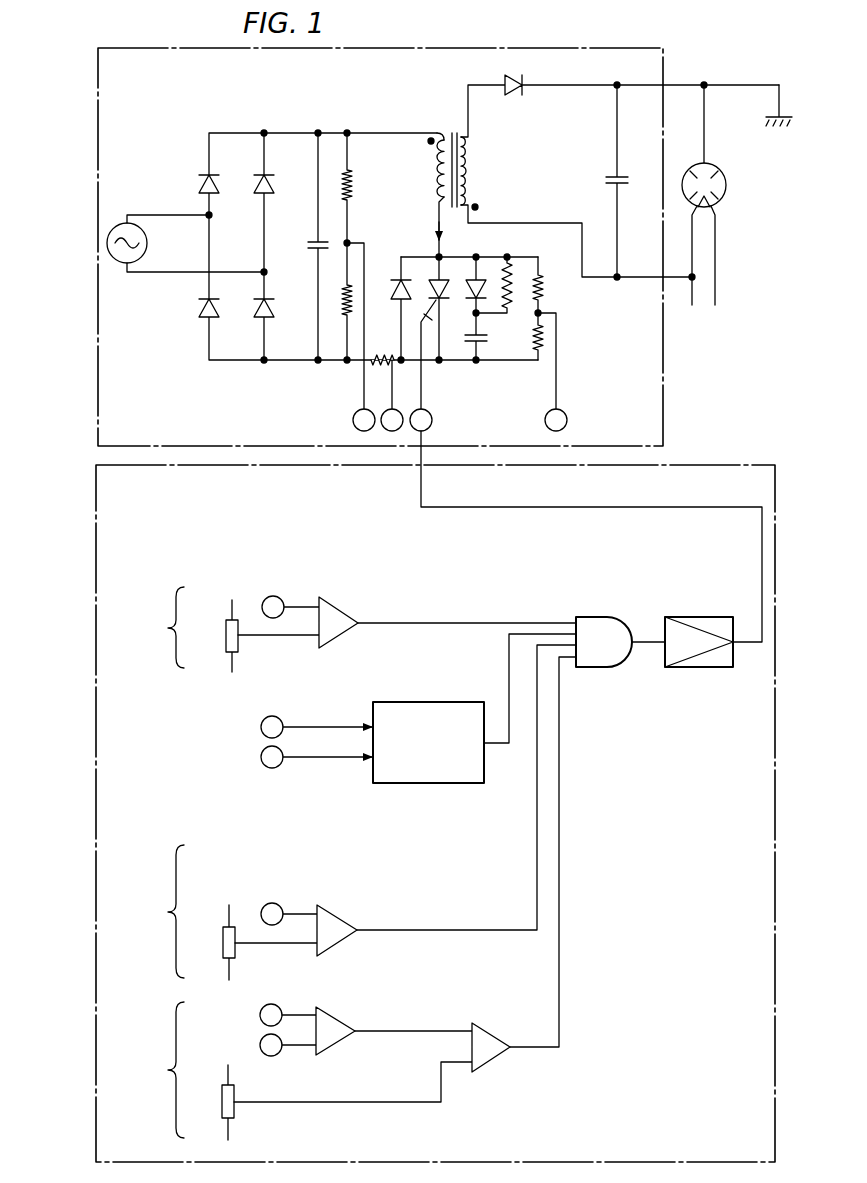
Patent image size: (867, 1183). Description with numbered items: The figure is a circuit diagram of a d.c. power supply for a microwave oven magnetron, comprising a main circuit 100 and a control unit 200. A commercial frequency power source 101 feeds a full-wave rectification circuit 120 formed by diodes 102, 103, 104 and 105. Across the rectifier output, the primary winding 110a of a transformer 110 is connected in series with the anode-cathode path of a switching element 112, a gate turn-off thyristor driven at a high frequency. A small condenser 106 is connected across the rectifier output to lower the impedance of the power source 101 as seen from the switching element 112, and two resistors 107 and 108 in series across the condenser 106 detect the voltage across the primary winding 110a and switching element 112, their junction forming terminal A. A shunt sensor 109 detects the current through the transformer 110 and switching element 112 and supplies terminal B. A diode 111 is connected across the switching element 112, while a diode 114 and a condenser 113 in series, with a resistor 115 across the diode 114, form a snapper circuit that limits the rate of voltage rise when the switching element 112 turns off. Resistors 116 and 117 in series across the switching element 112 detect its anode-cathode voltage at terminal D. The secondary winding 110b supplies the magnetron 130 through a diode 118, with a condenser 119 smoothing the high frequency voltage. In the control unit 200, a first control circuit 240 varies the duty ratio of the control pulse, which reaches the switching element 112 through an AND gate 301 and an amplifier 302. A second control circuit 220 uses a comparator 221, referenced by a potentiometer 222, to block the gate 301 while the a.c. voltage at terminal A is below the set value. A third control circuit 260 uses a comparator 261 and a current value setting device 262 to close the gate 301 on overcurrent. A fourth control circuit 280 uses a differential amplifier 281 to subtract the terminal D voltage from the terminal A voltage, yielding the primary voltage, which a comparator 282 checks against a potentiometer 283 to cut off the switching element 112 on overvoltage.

The main circuit 100 is at (98, 140).
The power source 101 is at (148, 244).
The diode 102 is at (198, 186).
The diode 103 is at (270, 183).
The diode 104 is at (198, 310).
The diode 105 is at (275, 316).
The condenser 106 is at (308, 244).
The resistor 107 is at (352, 186).
The resistor 108 is at (342, 295).
The sensor 109 is at (378, 355).
The transformer 110 is at (457, 145).
The primary winding 110a is at (433, 158).
The secondary winding 110b is at (470, 156).
The diode 111 is at (395, 275).
The switching element 112 is at (444, 278).
The condenser 113 is at (488, 340).
The diode 114 is at (480, 278).
The resistor 115 is at (512, 268).
The resistor 116 is at (543, 290).
The resistor 117 is at (545, 342).
The diode 118 is at (513, 94).
The condenser 119 is at (605, 182).
The full-wave rectification circuit 120 is at (251, 254).
The magnetron 130 is at (727, 186).
The control unit 200 is at (96, 590).
The second control circuit 220 is at (349, 629).
The comparator 221 is at (340, 612).
The potentiometer 222 is at (222, 638).
The first control circuit 240 is at (427, 702).
The third control circuit 260 is at (349, 812).
The comparator 261 is at (340, 918).
The current value setting device 262 is at (220, 948).
The fourth control circuit 280 is at (349, 898).
The differential amplifier 281 is at (340, 1016).
The comparator 282 is at (490, 1026).
The potentiometer 283 is at (218, 1108).
The AND gate 301 is at (596, 616).
The amplifier 302 is at (700, 616).